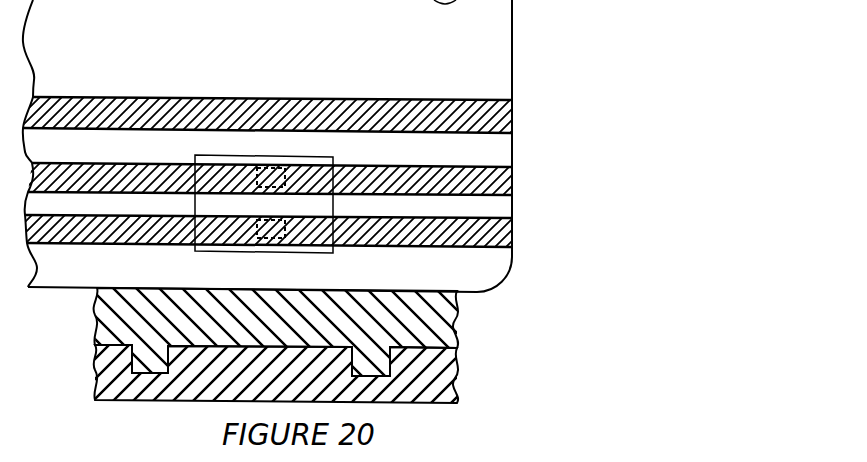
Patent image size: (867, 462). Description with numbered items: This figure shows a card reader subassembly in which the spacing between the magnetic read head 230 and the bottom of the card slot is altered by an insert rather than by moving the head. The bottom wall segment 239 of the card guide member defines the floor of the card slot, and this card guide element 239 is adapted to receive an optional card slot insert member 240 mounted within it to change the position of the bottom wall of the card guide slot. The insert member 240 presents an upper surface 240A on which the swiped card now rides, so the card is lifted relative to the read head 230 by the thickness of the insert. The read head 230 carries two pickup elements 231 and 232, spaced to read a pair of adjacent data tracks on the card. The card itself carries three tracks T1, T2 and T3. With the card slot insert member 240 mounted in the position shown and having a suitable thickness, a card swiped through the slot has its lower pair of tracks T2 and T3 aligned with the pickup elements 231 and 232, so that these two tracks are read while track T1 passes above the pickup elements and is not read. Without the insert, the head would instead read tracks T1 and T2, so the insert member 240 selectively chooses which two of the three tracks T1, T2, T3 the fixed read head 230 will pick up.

The track 1 T1 is at (506, 119).
The track 2 T2 is at (504, 185).
The track 3 T3 is at (504, 238).
The magnetic read head 230 is at (302, 150).
The pickup element 231 is at (268, 168).
The pickup element 232 is at (248, 214).
The card slot insert surface 240A is at (176, 288).
The card slot insert member 240 is at (459, 321).
The bottom wall segment of card guide member 239 is at (459, 378).